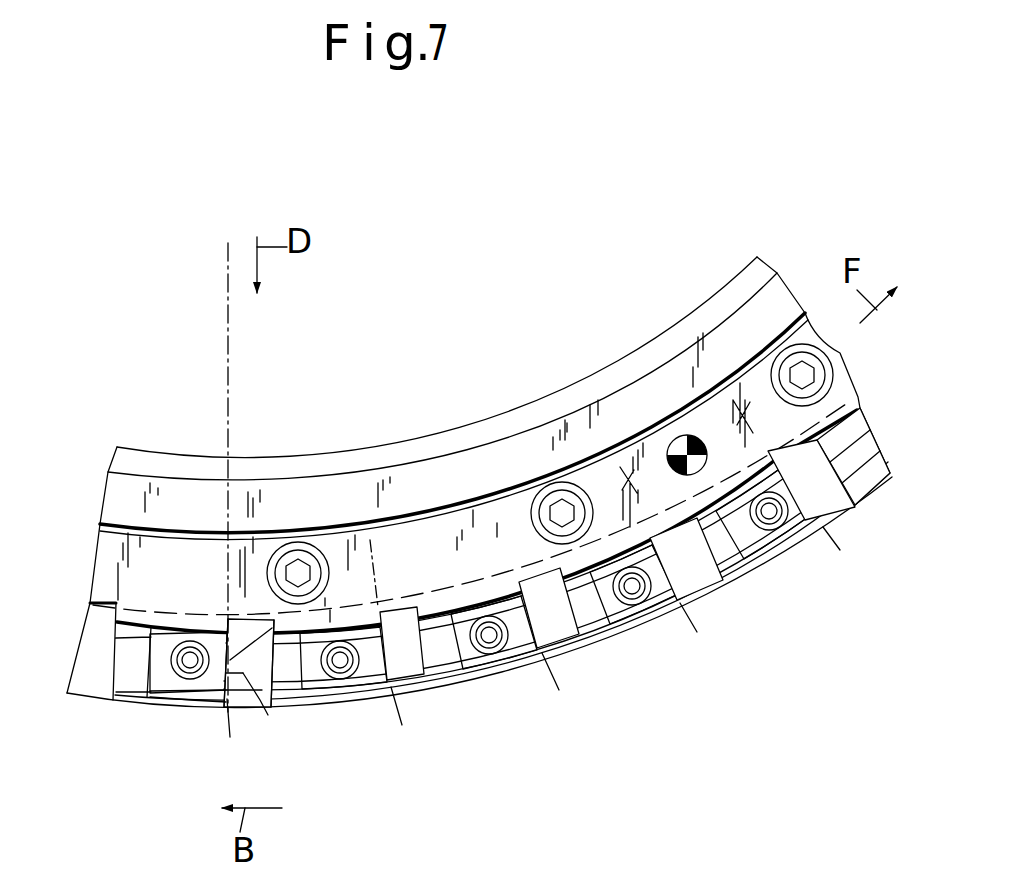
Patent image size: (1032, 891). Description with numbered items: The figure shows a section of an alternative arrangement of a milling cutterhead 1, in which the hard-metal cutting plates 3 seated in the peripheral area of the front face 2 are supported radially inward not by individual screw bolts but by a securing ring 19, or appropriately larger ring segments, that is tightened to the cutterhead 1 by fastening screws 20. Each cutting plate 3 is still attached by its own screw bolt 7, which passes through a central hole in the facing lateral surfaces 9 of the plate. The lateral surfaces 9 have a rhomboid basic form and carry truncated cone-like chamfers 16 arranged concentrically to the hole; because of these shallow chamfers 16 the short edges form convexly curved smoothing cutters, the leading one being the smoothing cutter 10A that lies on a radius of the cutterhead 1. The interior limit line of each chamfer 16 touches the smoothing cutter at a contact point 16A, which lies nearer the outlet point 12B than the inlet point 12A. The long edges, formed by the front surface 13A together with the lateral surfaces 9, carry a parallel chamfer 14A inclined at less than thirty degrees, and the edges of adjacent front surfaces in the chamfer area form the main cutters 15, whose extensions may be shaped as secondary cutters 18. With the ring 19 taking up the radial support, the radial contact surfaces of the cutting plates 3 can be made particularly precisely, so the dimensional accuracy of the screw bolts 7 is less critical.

The cutterhead 1 is at (835, 580).
The front face 2 is at (517, 467).
The cutting plate 3 is at (353, 714).
The screw bolt 7 is at (185, 660).
The lateral surface 9 is at (213, 658).
The smoothing cutter 10A is at (230, 660).
The inlet point 12A is at (240, 710).
The outlet point 12B is at (227, 627).
The front surface 13A is at (177, 700).
The chamfer 14A is at (195, 700).
The main cutter 15 is at (243, 712).
The truncated cone-like chamfer 16 is at (222, 708).
The contact point 16A is at (237, 702).
The secondary cutter 18 is at (228, 703).
The securing ring 19 is at (422, 550).
The fastening screw 20 is at (287, 543).